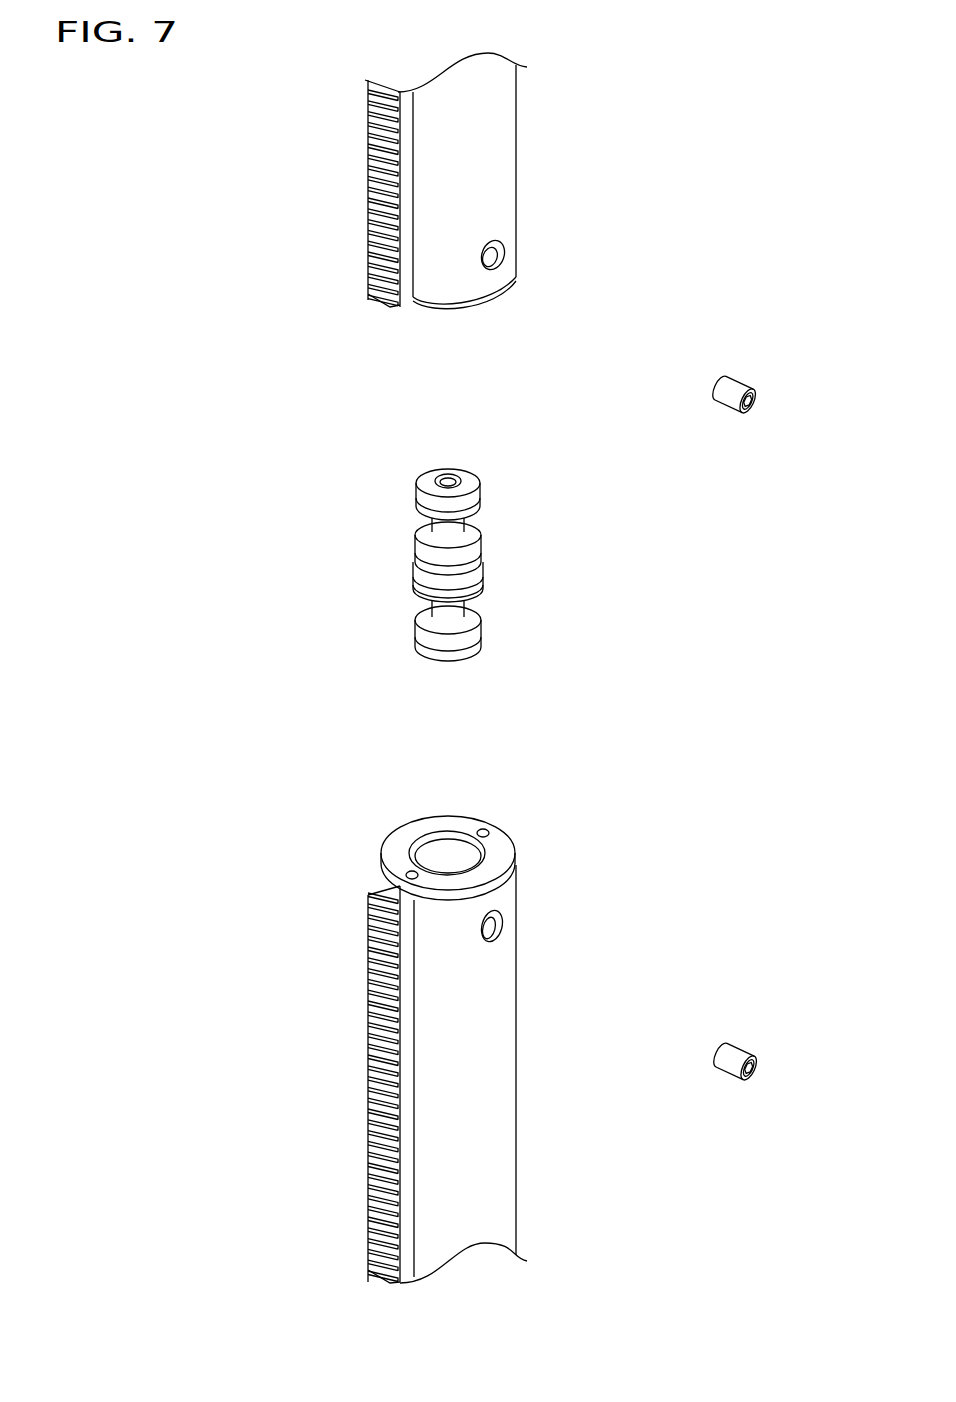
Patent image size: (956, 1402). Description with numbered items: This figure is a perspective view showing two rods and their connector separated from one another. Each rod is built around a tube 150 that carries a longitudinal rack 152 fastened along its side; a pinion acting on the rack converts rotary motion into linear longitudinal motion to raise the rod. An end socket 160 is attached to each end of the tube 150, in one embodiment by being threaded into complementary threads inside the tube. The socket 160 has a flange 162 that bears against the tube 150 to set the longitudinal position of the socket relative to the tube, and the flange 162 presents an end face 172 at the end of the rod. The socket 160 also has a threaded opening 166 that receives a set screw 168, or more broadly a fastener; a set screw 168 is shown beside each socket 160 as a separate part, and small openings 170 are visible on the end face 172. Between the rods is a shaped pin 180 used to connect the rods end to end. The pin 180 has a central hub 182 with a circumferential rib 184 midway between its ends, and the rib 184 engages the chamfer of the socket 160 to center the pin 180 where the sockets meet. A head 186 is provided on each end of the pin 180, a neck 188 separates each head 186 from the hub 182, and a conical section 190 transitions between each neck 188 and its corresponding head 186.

The tube 150 is at (517, 163).
The longitudinal rack 152 is at (368, 253).
The end socket 160 is at (512, 300).
The flange 162 is at (503, 892).
The threaded opening 166 is at (498, 935).
The set screw 168 is at (728, 405).
The flange holes 170 is at (490, 837).
The end face 172 is at (403, 838).
The shaped pin 180 is at (422, 542).
The central hub 182 is at (483, 535).
The circumferential rib 184 is at (483, 572).
The head 186 is at (468, 468).
The neck 188 is at (475, 603).
The conical section 190 is at (480, 522).